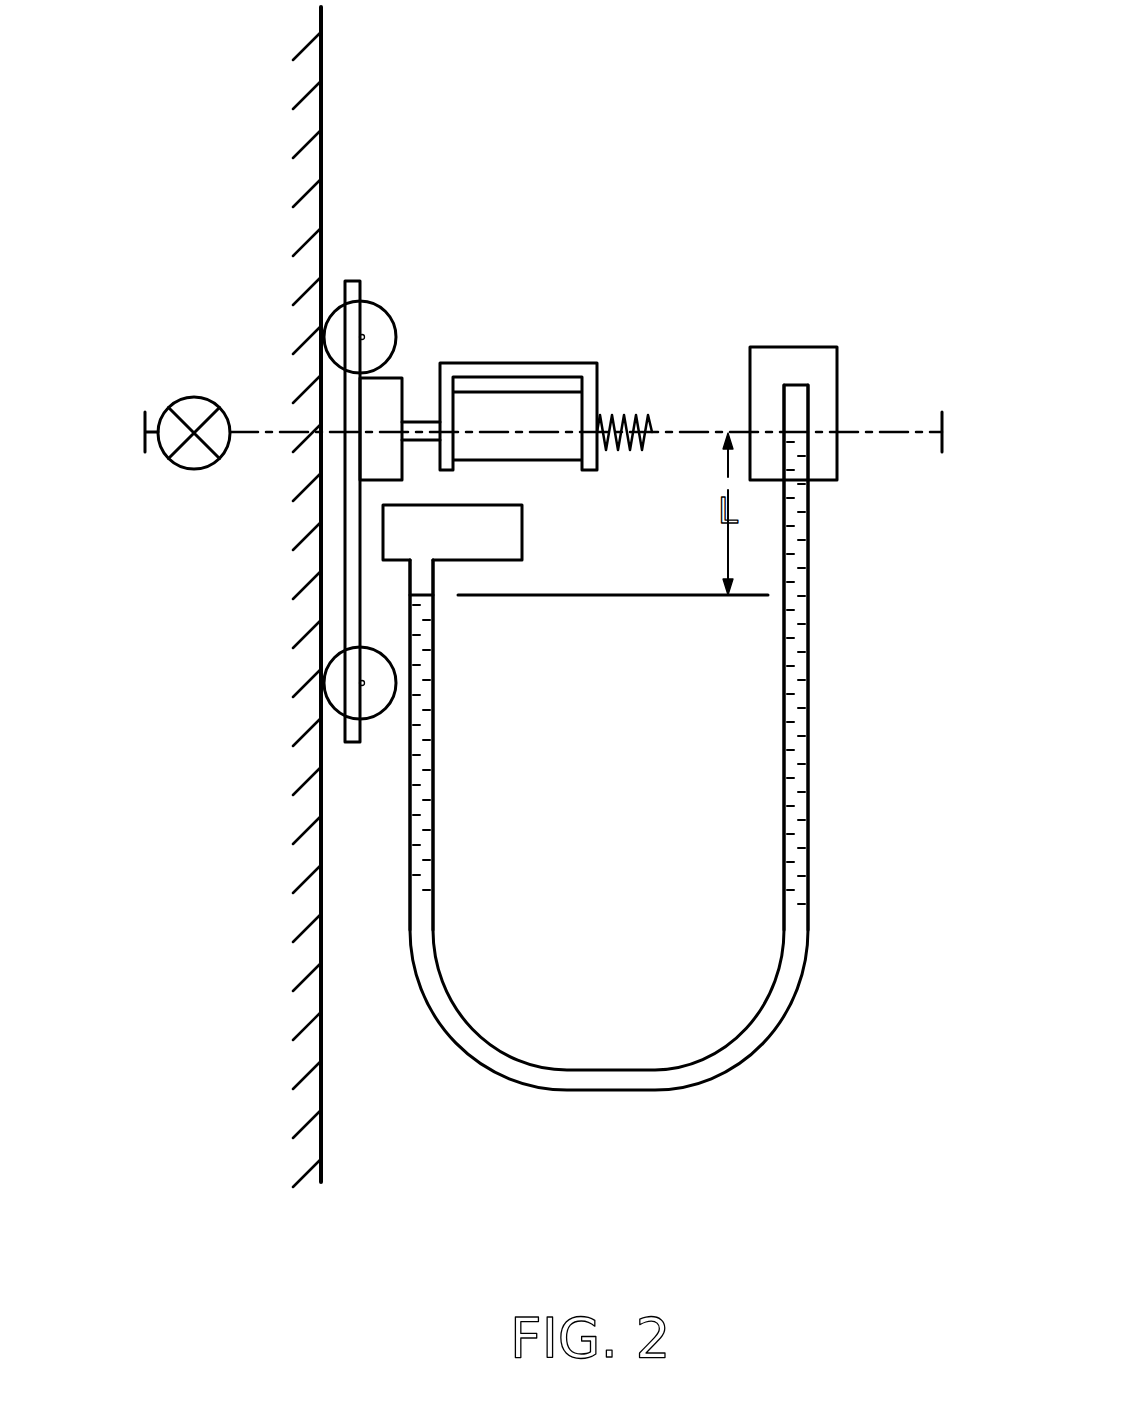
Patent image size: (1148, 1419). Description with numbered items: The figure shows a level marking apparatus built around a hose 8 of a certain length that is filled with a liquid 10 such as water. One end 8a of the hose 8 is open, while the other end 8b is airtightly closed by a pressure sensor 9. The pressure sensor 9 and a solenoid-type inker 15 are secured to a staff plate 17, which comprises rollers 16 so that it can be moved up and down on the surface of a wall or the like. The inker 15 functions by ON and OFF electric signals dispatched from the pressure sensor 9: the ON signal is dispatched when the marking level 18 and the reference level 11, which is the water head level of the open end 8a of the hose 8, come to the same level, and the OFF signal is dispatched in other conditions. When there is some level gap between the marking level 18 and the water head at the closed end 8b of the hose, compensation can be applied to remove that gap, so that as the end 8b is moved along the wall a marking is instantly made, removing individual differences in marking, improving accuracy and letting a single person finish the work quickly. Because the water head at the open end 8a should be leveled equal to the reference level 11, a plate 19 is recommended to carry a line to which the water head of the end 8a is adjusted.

The hose 8 is at (676, 737).
The one end of the hose 8a is at (808, 460).
The other end of the hose 8b is at (433, 575).
The pressure sensor 9 is at (522, 533).
The liquid 10 is at (423, 885).
The reference level 11 is at (667, 430).
The solenoid-type inker 15 is at (462, 352).
The rollers 16 is at (381, 305).
The staff plate 17 is at (343, 596).
The marking level 18 is at (177, 403).
The plate 19 is at (837, 393).